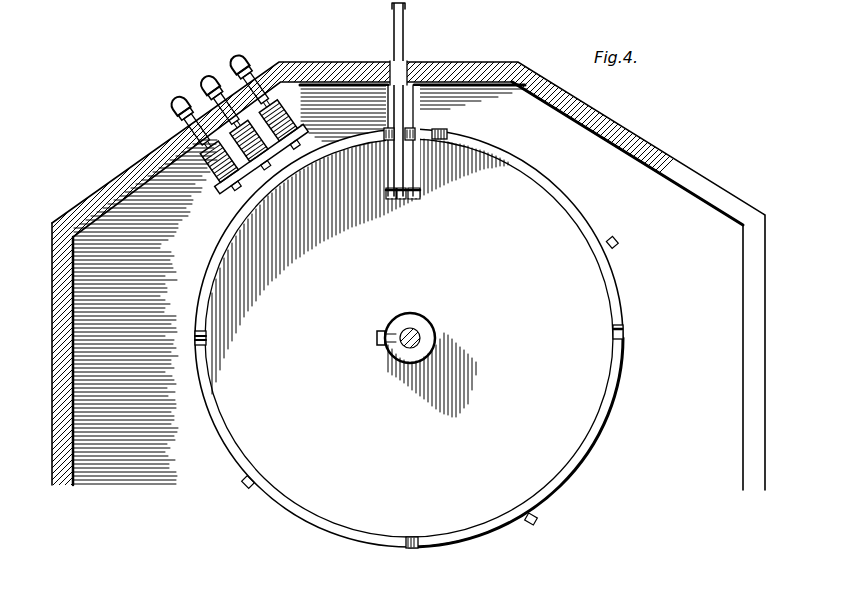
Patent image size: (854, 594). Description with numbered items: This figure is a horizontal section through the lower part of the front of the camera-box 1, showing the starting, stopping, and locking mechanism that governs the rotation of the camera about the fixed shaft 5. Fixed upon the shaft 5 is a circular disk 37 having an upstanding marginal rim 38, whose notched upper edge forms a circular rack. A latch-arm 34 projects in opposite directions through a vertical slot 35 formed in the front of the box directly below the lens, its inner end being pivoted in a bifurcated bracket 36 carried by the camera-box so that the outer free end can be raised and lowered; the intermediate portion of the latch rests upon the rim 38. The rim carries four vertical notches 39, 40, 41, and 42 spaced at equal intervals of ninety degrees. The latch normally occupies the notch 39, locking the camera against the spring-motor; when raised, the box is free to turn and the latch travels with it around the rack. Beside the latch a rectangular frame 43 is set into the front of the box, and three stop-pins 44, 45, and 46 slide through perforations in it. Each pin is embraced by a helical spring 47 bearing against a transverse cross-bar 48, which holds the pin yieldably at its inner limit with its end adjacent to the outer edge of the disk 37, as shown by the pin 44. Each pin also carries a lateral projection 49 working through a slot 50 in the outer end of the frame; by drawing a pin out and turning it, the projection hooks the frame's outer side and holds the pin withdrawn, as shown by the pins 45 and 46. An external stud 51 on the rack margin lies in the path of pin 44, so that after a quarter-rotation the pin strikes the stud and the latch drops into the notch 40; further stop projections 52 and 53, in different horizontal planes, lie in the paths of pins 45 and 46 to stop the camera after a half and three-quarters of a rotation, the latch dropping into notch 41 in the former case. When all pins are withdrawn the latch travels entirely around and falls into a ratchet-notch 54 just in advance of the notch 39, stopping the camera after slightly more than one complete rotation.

The camera-box 1 is at (100, 192).
The fixed shaft 5 is at (420, 330).
The latch-arm 34 is at (406, 56).
The vertical slot 35 is at (392, 64).
The bifurcated bracket 36 is at (417, 130).
The circular disk 37 is at (360, 278).
The marginal rim 38 is at (546, 186).
The notch 39 is at (388, 129).
The notch 40 is at (624, 329).
The notch 41 is at (417, 538).
The notch 42 is at (207, 340).
The rectangular frame 43 is at (236, 190).
The stop-pin 44 is at (254, 68).
The stop-pin 45 is at (216, 72).
The stop-pin 46 is at (180, 98).
The helical spring 47 is at (172, 142).
The transverse cross-bar 48 is at (186, 124).
The lateral projection 49 is at (198, 104).
The slot 50 is at (240, 90).
The stud 51 is at (618, 244).
The stop projection 52 is at (538, 520).
The stop projection 53 is at (244, 484).
The ratchet-notch 54 is at (448, 133).